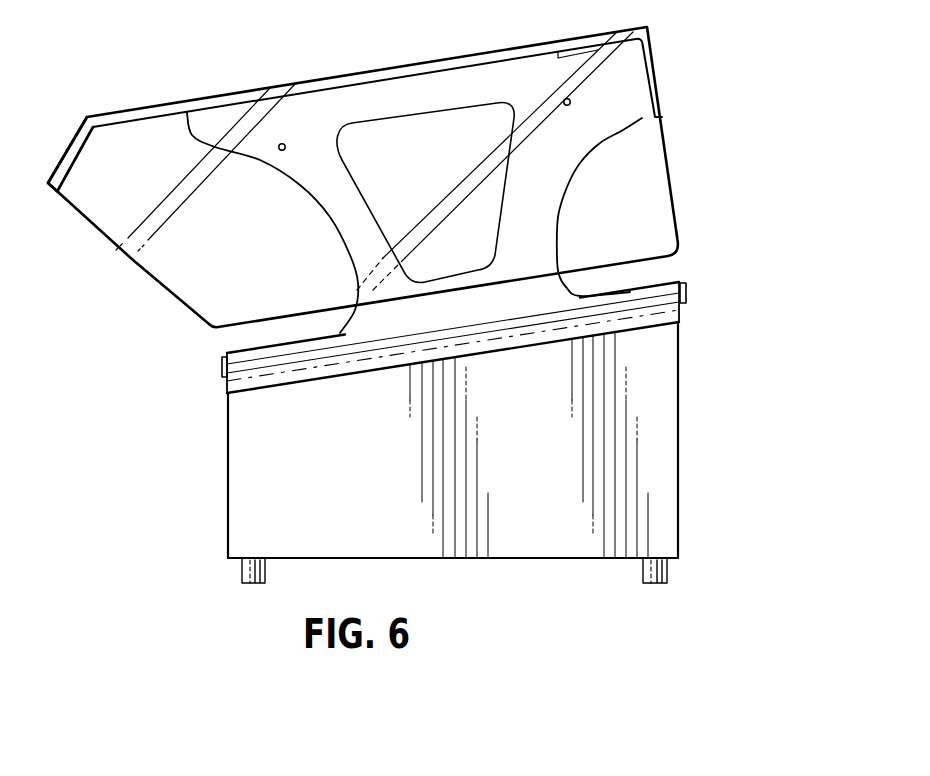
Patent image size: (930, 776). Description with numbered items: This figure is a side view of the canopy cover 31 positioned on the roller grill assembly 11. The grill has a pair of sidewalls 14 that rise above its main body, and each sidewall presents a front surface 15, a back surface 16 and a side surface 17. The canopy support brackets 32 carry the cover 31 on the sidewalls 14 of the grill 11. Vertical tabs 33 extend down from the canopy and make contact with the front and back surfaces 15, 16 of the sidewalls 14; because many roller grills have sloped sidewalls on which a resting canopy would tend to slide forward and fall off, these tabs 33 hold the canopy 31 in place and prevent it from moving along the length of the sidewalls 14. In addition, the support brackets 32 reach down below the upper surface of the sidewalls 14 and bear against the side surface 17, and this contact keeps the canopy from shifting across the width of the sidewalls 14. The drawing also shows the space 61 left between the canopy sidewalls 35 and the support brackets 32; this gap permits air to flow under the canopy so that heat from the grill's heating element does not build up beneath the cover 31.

The roller grill assembly 11 is at (725, 467).
The sidewalls 14 is at (441, 452).
The front surface 15 is at (228, 515).
The back surface 16 is at (681, 410).
The side surface 17 is at (447, 317).
The canopy cover 31 is at (415, 180).
The canopy support brackets 32 is at (362, 193).
The vertical tabs 33 is at (222, 366).
The canopy sidewalls 35 is at (147, 270).
The space 61 is at (317, 328).